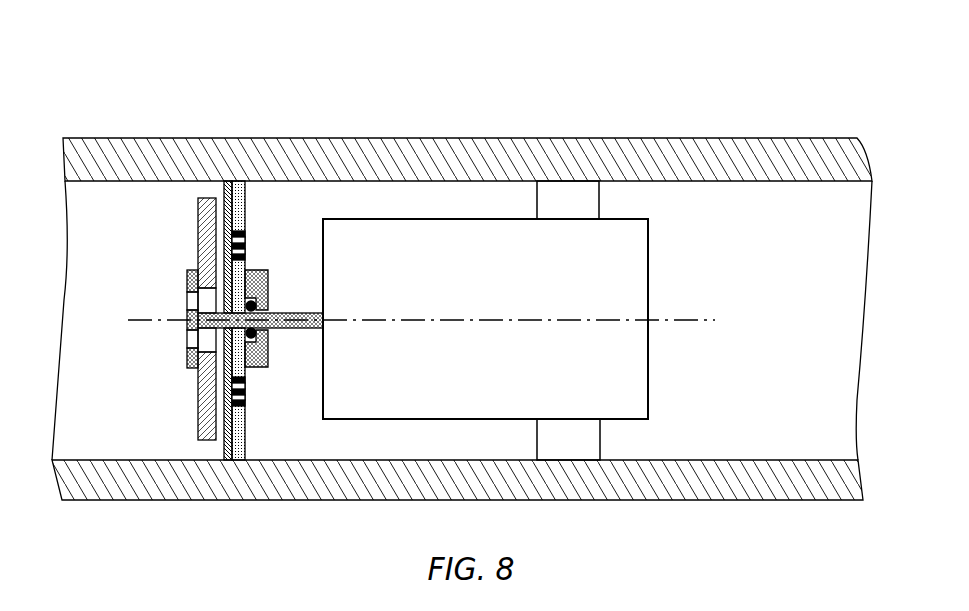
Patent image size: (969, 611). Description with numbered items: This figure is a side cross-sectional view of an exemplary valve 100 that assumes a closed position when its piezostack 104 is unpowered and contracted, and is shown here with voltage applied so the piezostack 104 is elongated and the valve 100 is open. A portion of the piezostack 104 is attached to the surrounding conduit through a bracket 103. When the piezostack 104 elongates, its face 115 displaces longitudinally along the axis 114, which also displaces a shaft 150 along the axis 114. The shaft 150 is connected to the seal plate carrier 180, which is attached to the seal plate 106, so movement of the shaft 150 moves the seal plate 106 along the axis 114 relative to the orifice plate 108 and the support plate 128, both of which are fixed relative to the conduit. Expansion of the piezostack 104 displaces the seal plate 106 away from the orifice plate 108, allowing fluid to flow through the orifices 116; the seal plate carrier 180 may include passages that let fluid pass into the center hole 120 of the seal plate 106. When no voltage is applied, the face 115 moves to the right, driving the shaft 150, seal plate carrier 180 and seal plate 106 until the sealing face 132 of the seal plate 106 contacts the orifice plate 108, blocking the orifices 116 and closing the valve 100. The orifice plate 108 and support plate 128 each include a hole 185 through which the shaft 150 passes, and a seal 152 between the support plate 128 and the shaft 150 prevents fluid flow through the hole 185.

The valve 100 is at (652, 58).
The bracket 103 is at (568, 190).
The piezostack 104 is at (631, 395).
The seal plate 106 is at (197, 223).
The orifice plate 108 is at (224, 190).
The axis 114 is at (700, 315).
The face 115 is at (323, 397).
The orifices 116 is at (224, 245).
The center hole 120 is at (208, 342).
The support plate 128 is at (238, 213).
The sealing face 132 is at (237, 433).
The shaft 150 is at (287, 309).
The seal 152 is at (252, 291).
The seal plate carrier 180 is at (182, 359).
The hole 185 is at (241, 358).